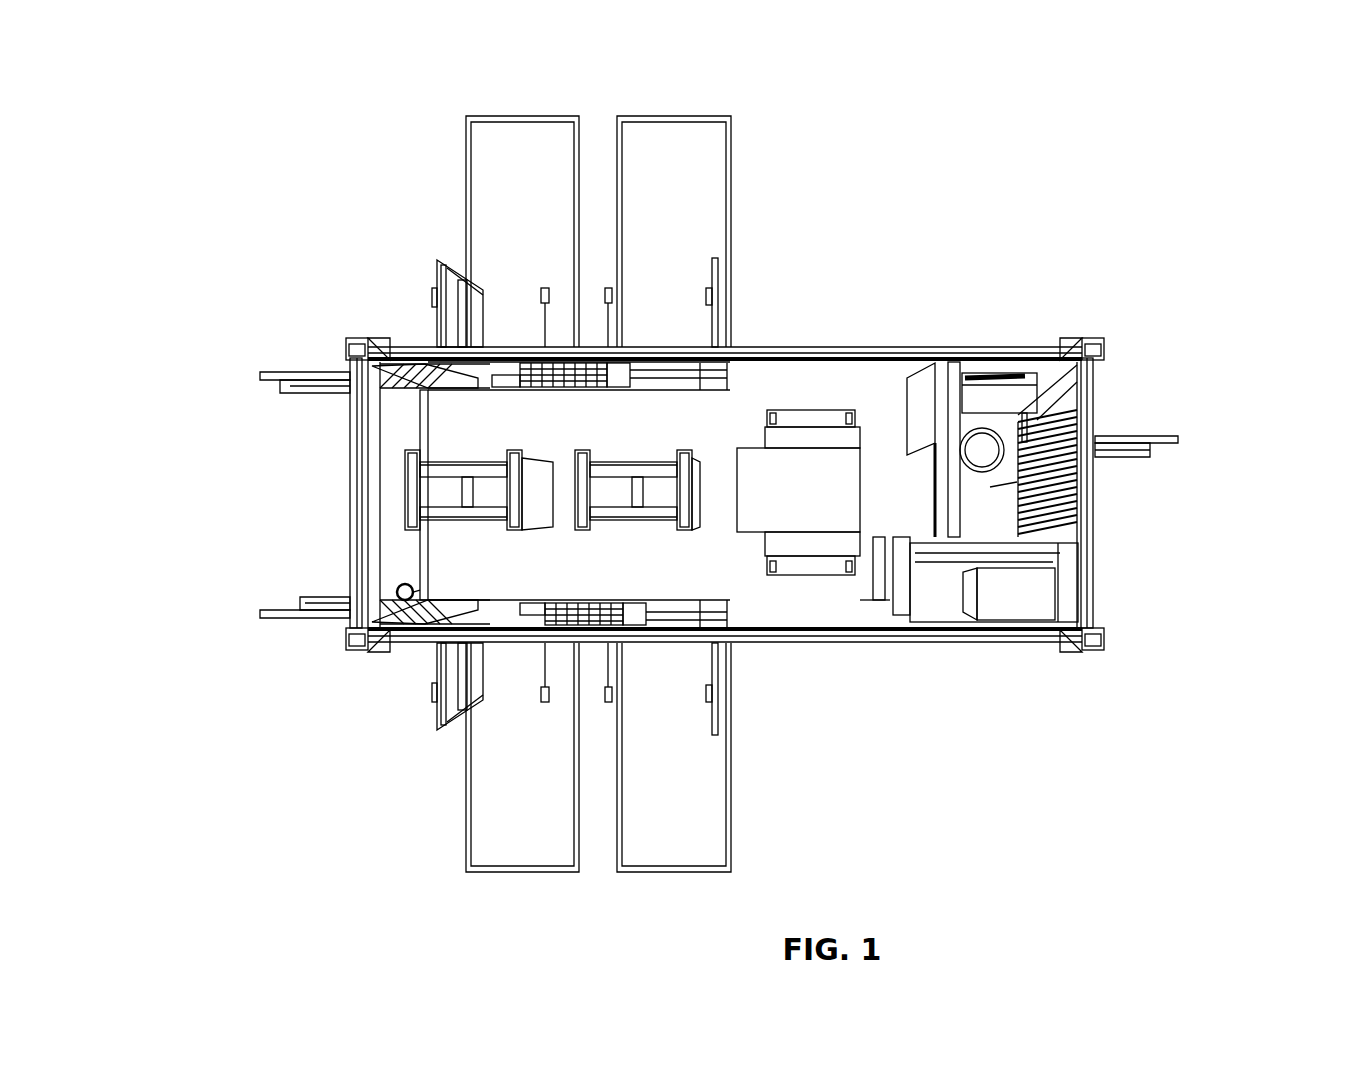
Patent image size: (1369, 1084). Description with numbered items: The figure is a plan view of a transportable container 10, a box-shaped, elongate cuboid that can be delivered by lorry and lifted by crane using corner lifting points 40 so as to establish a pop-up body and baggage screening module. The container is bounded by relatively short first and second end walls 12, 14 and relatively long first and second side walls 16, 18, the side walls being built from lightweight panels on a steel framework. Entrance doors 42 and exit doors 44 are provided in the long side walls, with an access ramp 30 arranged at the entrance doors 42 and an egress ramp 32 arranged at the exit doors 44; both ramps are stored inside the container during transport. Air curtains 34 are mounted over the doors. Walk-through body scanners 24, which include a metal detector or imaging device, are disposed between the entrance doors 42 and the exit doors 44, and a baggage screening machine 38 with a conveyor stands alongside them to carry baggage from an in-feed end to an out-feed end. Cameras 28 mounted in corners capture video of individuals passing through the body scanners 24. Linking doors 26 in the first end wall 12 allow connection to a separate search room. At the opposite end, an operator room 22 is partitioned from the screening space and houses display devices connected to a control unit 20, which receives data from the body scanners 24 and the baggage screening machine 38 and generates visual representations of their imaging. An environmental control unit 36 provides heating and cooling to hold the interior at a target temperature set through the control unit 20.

The transportable container 10 is at (747, 409).
The first end wall 12 is at (352, 478).
The second end wall 14 is at (1093, 478).
The first side wall 16 is at (985, 346).
The second side wall 18 is at (943, 643).
The control unit 20 is at (1015, 595).
The operator room 22 is at (1078, 448).
The body scanners 24 is at (633, 463).
The linking doors 26 is at (275, 372).
The cameras 28 is at (398, 588).
The access ramp 30 is at (675, 147).
The egress ramp 32 is at (536, 835).
The air curtains 34 is at (780, 676).
The environmental control unit 36 is at (947, 587).
The baggage screening machine 38 is at (803, 472).
The corner lifting points 40 is at (1104, 347).
The entrance doors 42 is at (437, 267).
The exit doors 44 is at (433, 710).